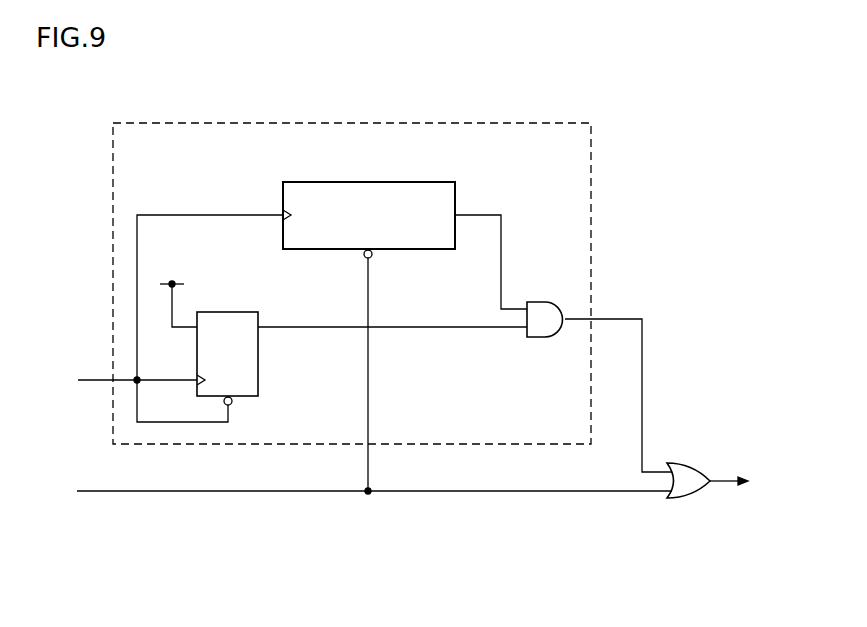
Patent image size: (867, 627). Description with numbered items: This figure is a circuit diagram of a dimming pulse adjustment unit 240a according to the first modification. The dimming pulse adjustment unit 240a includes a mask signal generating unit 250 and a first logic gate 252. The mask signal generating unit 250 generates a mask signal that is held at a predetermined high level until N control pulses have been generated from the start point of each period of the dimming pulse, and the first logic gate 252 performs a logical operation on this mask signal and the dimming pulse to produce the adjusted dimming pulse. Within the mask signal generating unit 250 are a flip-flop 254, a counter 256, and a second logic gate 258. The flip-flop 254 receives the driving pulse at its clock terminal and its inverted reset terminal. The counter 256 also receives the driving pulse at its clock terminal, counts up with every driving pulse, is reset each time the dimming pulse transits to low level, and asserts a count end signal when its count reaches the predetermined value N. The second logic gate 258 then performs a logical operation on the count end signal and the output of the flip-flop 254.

The dimming pulse adjustment unit 240a is at (437, 579).
The mask signal generating unit 250 is at (467, 122).
The first logic gate 252 is at (681, 463).
The flip-flop 254 is at (225, 311).
The counter 256 is at (391, 180).
The second logic gate 258 is at (538, 300).